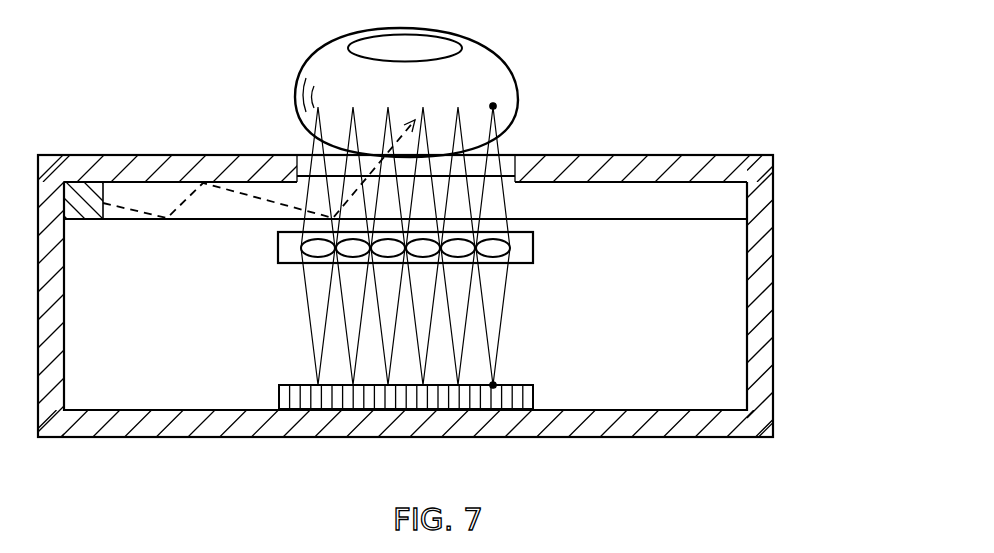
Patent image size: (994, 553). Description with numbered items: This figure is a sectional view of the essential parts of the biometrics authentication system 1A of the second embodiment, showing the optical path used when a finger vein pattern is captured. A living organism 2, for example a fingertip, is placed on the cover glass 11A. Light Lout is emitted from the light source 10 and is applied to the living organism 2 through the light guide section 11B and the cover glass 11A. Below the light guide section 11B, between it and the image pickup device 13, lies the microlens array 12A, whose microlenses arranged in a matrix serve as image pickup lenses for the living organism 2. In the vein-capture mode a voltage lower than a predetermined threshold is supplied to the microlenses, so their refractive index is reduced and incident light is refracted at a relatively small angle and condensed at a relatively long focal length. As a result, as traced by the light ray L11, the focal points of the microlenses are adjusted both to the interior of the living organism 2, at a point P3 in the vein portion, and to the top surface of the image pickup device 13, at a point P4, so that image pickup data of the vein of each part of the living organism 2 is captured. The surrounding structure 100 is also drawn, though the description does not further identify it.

The biometrics authentication system 1A is at (788, 112).
The living organism 2 is at (507, 50).
The focal point in the living organism P3 is at (493, 106).
The light source 10 is at (82, 182).
The light emitted from the light source Lout is at (176, 212).
The cover glass 11A is at (308, 157).
The light guide section 11B is at (727, 199).
The microlens array 12A is at (278, 248).
The light ray L11 is at (507, 300).
The image pickup device 13 is at (280, 398).
The focal point on the image pickup device P4 is at (493, 385).
The housing 100 is at (767, 300).